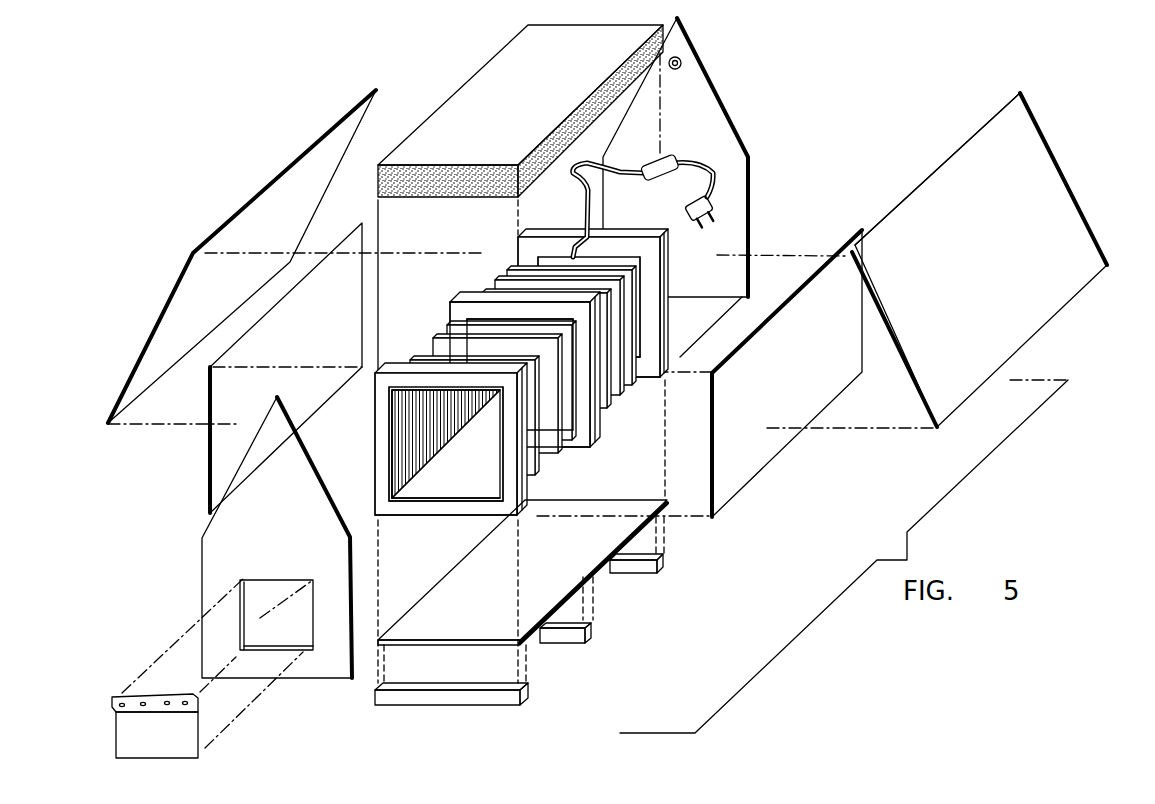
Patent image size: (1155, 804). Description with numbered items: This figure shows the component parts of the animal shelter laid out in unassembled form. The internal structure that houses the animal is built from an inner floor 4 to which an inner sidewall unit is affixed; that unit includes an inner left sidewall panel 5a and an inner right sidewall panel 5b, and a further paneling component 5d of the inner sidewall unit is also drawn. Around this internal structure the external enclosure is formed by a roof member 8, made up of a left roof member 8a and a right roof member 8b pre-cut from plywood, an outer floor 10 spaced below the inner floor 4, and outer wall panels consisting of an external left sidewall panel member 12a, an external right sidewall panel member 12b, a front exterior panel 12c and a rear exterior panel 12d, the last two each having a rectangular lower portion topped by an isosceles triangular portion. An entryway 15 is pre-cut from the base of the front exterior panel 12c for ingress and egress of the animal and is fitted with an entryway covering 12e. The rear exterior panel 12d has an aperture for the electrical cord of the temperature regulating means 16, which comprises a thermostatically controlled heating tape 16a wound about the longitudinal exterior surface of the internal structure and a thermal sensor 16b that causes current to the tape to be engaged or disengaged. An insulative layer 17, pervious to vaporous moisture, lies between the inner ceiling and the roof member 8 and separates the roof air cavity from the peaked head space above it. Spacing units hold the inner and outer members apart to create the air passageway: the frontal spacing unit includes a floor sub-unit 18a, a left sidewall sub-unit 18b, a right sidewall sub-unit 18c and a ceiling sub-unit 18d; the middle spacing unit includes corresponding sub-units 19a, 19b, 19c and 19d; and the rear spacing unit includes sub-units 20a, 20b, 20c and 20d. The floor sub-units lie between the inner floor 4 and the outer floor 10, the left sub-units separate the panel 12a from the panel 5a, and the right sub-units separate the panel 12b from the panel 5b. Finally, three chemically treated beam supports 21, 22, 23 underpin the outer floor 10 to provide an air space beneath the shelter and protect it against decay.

The inner floor 4 is at (423, 487).
The inner left sidewall panel 5a is at (390, 473).
The inner right sidewall panel 5b is at (463, 502).
The filter face 5d is at (452, 400).
The roof member 8 is at (253, 200).
The left roof member 8a is at (173, 323).
The right roof member 8b is at (1068, 230).
The outer floor 10 is at (598, 565).
The external left sidewall panel member 12a is at (203, 445).
The external right sidewall panel member 12b is at (760, 442).
The external enclosure front panel 12c is at (225, 562).
The external enclosure rear panel 12d is at (685, 88).
The mounting bracket 12e is at (145, 720).
The housing entryway 15 is at (240, 632).
The temperature regulating means 16 is at (717, 177).
The heating tape 16a is at (433, 343).
The thermal sensor 16b is at (667, 157).
The insulative layer 17 is at (488, 93).
The frontal floor spacing sub-unit 18a is at (432, 508).
The frontal left sidewall spacing sub-unit 18b is at (383, 420).
The frontal right sidewall spacing sub-unit 18c is at (519, 500).
The frontal ceiling spacing sub-unit 18d is at (405, 372).
The middle floor spacing sub-unit 19a is at (573, 447).
The middle left sidewall spacing sub-unit 19b is at (450, 308).
The middle right sidewall spacing sub-unit 19c is at (592, 425).
The middle ceiling spacing sub-unit 19d is at (475, 302).
The rear floor spacing sub-unit 20a is at (642, 377).
The rear left sidewall spacing sub-unit 20b is at (518, 248).
The rear right sidewall spacing sub-unit 20c is at (663, 348).
The rear ceiling spacing sub-unit 20d is at (633, 230).
The beam support 21 is at (522, 695).
The beam support 22 is at (597, 626).
The beam support 23 is at (660, 562).